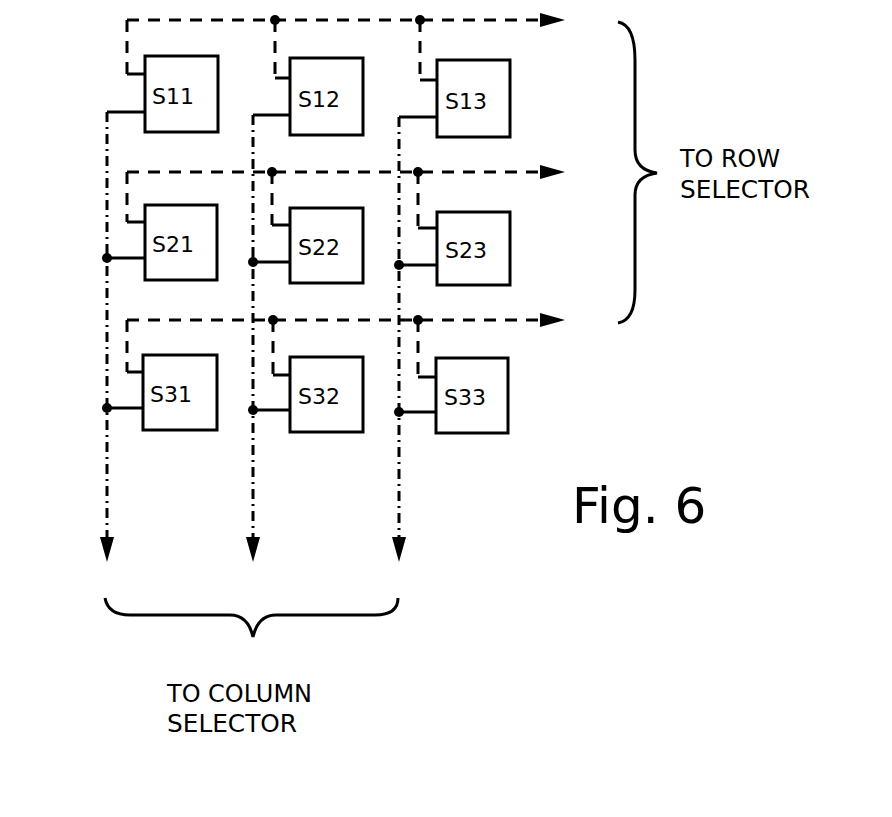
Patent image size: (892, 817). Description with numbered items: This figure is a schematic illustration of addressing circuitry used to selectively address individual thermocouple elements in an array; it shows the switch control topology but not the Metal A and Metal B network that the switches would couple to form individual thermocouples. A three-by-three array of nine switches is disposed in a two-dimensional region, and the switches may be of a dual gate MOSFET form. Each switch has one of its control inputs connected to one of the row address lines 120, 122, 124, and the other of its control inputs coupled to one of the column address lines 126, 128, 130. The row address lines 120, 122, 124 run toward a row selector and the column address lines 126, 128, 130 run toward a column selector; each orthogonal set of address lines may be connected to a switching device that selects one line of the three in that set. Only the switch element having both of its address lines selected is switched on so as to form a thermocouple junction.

The row address line 120 is at (520, 32).
The row address line 122 is at (515, 182).
The row address line 124 is at (525, 328).
The column address line 126 is at (113, 495).
The column address line 128 is at (262, 500).
The column address line 130 is at (406, 497).